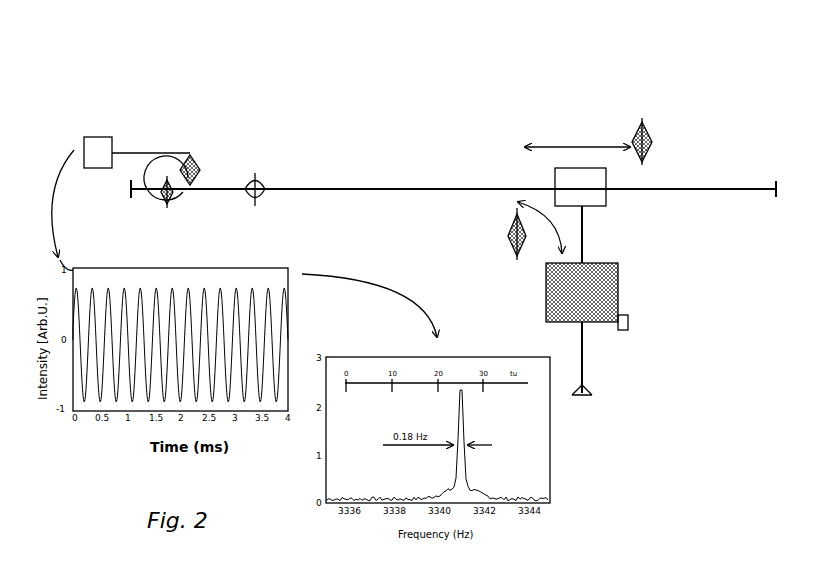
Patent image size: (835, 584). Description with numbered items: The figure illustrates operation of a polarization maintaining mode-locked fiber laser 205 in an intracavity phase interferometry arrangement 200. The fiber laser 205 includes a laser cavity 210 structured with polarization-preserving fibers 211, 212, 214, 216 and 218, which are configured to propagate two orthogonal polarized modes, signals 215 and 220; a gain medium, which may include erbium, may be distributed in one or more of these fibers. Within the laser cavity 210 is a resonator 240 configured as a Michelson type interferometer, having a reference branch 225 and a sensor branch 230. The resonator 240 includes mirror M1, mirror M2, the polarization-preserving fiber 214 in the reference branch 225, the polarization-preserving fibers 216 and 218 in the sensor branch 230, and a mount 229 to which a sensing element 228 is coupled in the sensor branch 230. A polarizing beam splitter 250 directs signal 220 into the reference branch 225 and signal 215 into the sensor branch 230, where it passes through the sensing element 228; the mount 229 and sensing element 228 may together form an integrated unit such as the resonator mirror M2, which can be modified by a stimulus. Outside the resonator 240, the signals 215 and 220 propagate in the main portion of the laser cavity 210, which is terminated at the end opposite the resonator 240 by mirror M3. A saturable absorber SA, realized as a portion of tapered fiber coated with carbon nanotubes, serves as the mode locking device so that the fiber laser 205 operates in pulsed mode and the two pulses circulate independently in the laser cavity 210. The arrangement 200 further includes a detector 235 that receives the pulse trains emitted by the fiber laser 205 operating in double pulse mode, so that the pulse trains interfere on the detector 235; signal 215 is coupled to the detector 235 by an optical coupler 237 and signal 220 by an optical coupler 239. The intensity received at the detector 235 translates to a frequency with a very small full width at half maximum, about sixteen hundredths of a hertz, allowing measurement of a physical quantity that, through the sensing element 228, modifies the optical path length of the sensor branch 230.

The intracavity phase interferometry arrangement 200 is at (193, 75).
The polarization maintaining mode-locked fiber laser 205 is at (337, 122).
The laser cavity 210 is at (495, 140).
The polarization-preserving fiber 211 is at (241, 200).
The polarization-preserving fiber 212 is at (382, 197).
The polarization-preserving fiber 214 is at (628, 193).
The signal 215 is at (200, 165).
The polarization-preserving fiber 216 is at (592, 237).
The polarization-preserving fiber 218 is at (576, 342).
The signal 220 is at (167, 207).
The reference branch 225 is at (740, 194).
The sensing element 228 is at (618, 273).
The mount 229 is at (630, 318).
The sensor branch 230 is at (590, 385).
The detector 235 is at (86, 137).
The optical coupler 237 is at (178, 160).
The optical coupler 239 is at (211, 196).
The resonator 240 is at (735, 378).
The polarizing beam splitter 250 is at (556, 170).
The mirror M1 is at (786, 190).
The mirror M2 is at (590, 400).
The mirror M3 is at (125, 193).
The saturable absorber SA is at (254, 178).